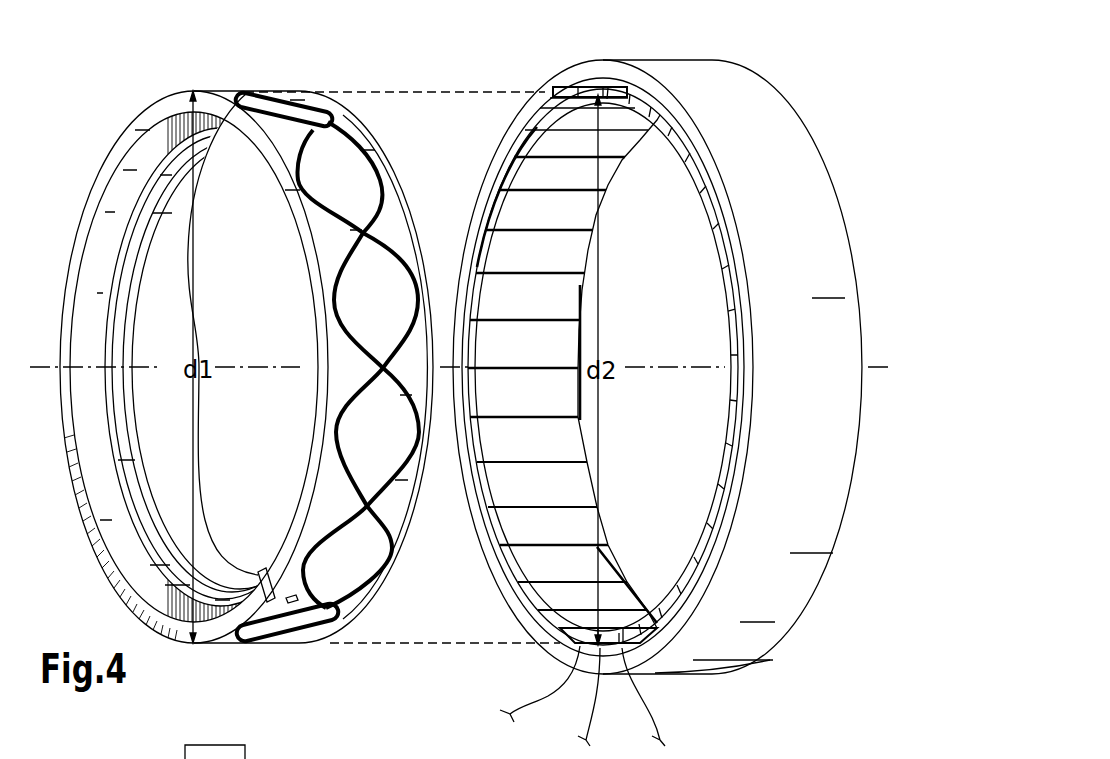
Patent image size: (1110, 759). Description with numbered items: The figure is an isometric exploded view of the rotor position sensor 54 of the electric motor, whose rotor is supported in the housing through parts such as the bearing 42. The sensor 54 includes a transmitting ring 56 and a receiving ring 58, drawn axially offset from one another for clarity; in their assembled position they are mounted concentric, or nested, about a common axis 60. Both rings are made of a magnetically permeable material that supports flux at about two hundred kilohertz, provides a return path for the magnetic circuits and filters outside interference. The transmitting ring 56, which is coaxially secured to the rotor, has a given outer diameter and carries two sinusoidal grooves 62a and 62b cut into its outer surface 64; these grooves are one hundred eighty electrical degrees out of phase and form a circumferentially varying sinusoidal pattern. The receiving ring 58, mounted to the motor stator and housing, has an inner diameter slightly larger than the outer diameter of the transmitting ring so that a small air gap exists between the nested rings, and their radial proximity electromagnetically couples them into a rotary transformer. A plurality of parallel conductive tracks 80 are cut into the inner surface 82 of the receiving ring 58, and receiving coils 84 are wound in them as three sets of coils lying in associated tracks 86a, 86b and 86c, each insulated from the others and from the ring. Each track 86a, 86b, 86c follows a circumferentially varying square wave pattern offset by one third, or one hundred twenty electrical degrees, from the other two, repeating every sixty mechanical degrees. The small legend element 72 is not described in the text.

The bearing 42 is at (680, 60).
The rotor position sensor 54 is at (434, 72).
The transmitting ring 56 is at (97, 177).
The receiving ring 58 is at (567, 63).
The common axis 60 is at (258, 360).
The sinusoidal groove 62a is at (367, 156).
The sinusoidal groove 62b is at (330, 216).
The outer surface 64 is at (393, 223).
The legend element 72 is at (253, 747).
The parallel conductive tracks 80 is at (503, 419).
The inner surface 82 is at (517, 528).
The receiving coils 84 is at (615, 477).
The track 86a is at (582, 157).
The track 86b is at (553, 230).
The track 86c is at (560, 190).